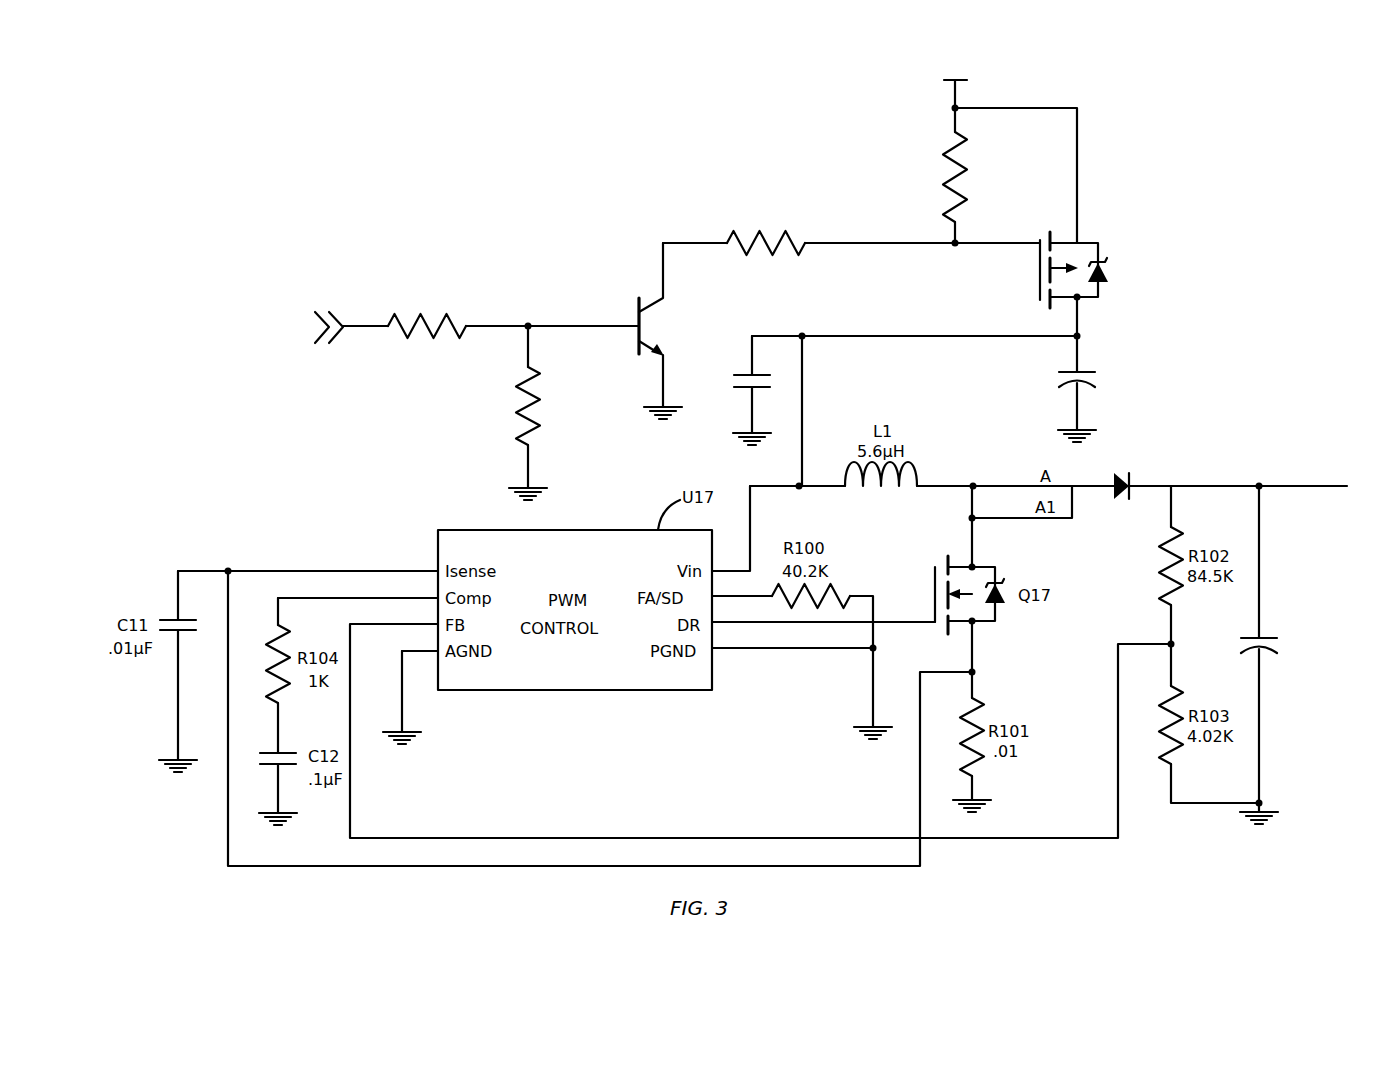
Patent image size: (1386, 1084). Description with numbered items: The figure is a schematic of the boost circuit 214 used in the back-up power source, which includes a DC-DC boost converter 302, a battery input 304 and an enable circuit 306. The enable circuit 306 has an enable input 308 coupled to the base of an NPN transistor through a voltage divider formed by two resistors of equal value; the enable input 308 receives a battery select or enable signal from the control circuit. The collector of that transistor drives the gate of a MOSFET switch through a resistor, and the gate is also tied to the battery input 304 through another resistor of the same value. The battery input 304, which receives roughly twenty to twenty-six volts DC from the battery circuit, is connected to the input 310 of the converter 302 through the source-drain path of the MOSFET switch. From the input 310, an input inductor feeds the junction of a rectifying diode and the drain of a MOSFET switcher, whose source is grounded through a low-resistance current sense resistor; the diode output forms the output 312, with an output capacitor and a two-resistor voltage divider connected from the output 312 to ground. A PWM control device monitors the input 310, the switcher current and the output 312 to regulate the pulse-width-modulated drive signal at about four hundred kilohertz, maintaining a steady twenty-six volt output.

The boost circuit 214 is at (240, 203).
The DC-DC boost converter 302 is at (1178, 369).
The battery input 304 is at (950, 88).
The enable circuit 306 is at (688, 204).
The enable input 308 is at (330, 313).
The input of the DC-DC converter 310 is at (857, 336).
The output of the DC-DC converter 312 is at (1264, 484).